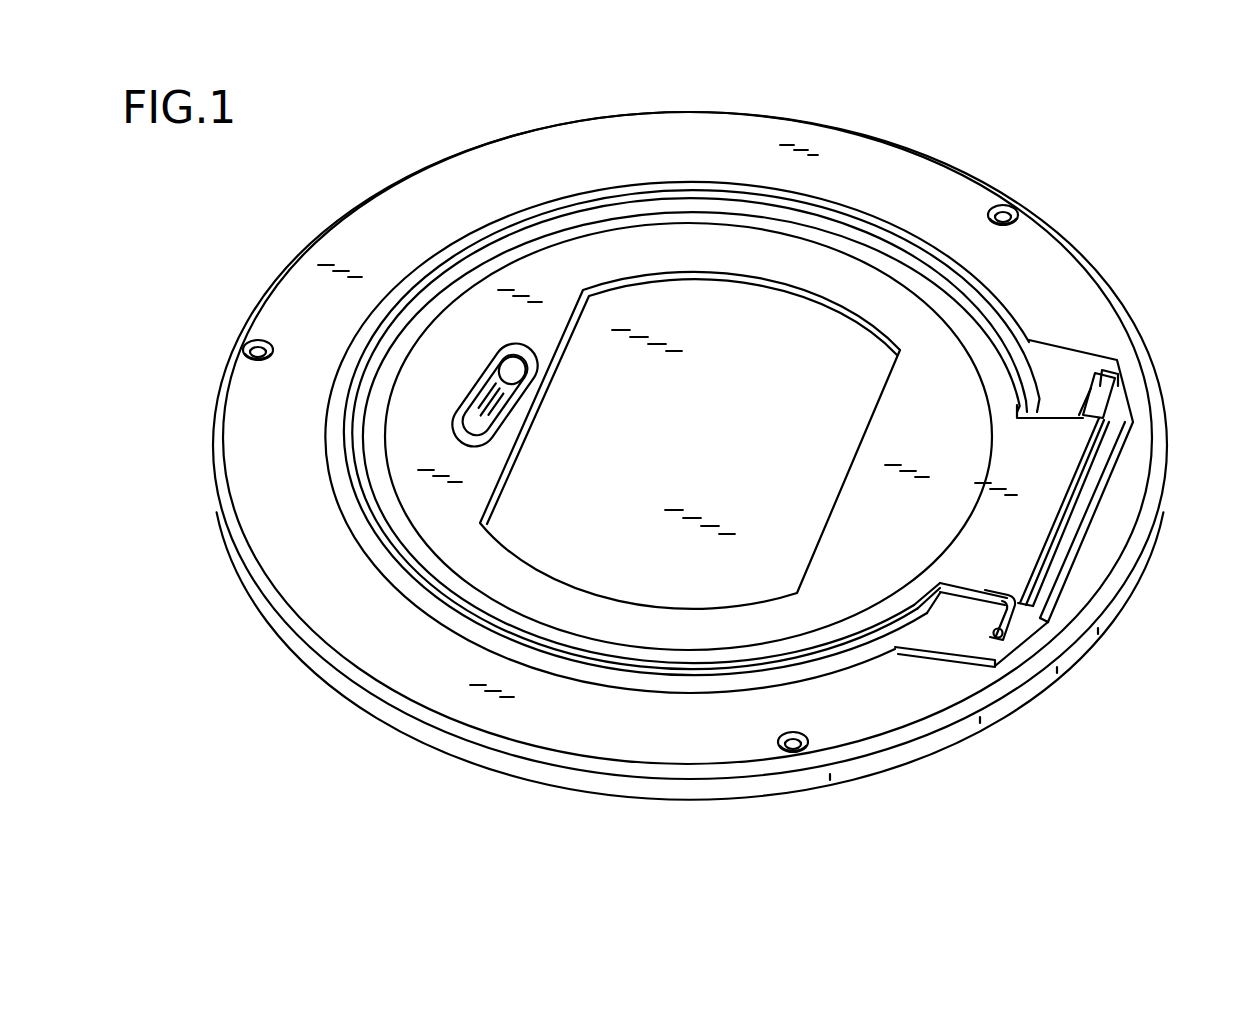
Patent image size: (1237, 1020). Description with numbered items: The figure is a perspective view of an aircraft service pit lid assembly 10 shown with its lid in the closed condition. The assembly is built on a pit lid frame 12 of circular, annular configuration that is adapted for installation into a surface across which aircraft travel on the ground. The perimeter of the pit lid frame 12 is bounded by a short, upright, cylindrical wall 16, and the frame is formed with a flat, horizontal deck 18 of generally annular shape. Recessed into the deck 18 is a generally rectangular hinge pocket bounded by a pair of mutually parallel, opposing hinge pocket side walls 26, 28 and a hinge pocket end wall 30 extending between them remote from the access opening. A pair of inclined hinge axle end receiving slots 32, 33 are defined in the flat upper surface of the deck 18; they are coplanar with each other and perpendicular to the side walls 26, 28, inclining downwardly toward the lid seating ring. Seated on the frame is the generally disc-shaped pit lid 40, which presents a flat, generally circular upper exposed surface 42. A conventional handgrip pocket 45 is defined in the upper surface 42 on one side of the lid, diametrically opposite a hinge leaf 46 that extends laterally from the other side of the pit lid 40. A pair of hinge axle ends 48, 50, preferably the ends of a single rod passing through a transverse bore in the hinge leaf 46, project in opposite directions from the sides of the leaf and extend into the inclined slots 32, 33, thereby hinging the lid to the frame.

The aircraft service pit lid assembly 10 is at (966, 144).
The pit lid frame 12 is at (642, 150).
The cylindrical wall 16 is at (924, 750).
The deck 18 is at (550, 162).
The hinge pocket side wall 26 is at (1040, 405).
The hinge pocket side wall 28 is at (985, 590).
The hinge pocket end wall 30 is at (1078, 500).
The hinge axle end receiving slot 32 is at (1120, 355).
The hinge axle end receiving slot 33 is at (1010, 605).
The pit lid 40 is at (789, 275).
The upper exposed surface 42 is at (690, 247).
The handgrip pocket 45 is at (500, 405).
The hinge leaf 46 is at (1020, 470).
The hinge axle end 48 is at (1105, 406).
The hinge axle end 50 is at (1012, 624).